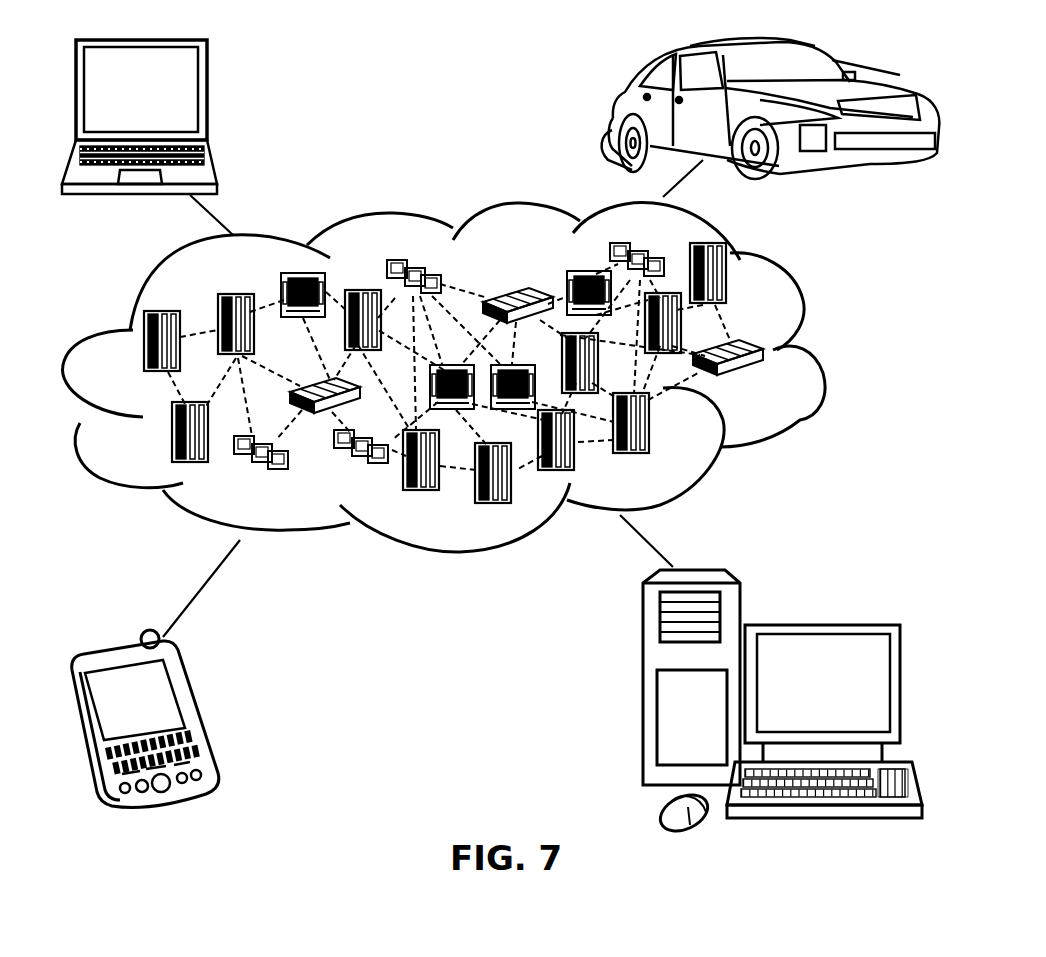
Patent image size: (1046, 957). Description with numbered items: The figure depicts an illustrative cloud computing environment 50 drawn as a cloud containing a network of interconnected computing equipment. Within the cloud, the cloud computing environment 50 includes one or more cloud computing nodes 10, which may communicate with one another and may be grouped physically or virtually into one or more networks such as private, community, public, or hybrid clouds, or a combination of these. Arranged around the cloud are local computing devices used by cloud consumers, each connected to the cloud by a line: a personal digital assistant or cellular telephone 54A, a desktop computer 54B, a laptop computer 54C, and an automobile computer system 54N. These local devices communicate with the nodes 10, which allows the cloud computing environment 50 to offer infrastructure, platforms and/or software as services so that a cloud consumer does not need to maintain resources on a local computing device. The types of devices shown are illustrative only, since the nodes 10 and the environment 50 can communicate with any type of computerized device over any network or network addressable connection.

The cloud computing node 10 is at (770, 382).
The cloud computing environment 50 is at (822, 353).
The personal digital assistant or cellular telephone 54A is at (197, 710).
The desktop computer 54B is at (820, 623).
The laptop computer 54C is at (207, 97).
The automobile computer system 54N is at (618, 113).